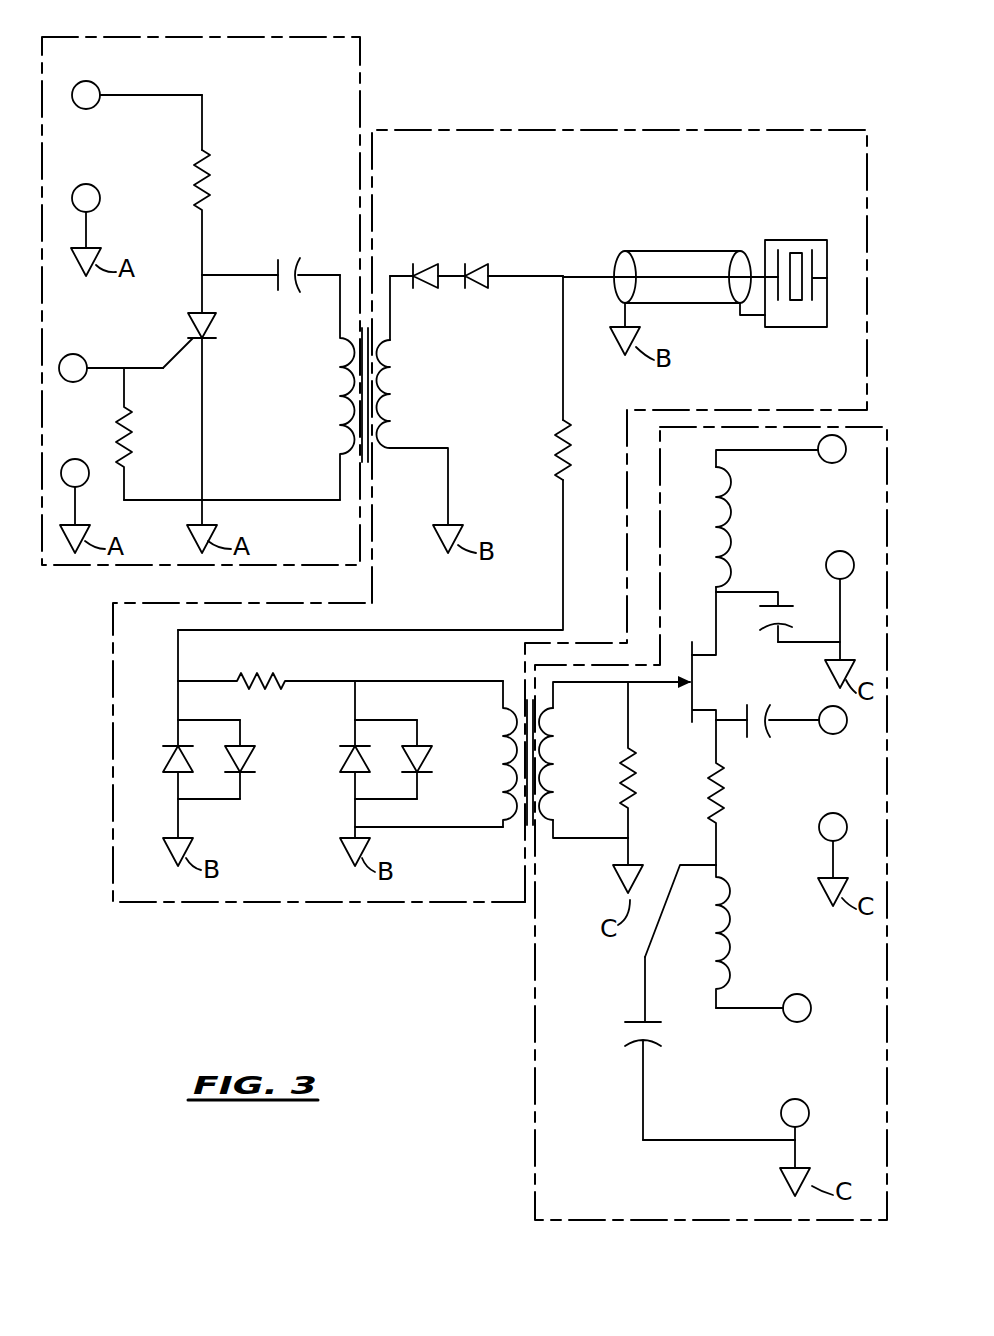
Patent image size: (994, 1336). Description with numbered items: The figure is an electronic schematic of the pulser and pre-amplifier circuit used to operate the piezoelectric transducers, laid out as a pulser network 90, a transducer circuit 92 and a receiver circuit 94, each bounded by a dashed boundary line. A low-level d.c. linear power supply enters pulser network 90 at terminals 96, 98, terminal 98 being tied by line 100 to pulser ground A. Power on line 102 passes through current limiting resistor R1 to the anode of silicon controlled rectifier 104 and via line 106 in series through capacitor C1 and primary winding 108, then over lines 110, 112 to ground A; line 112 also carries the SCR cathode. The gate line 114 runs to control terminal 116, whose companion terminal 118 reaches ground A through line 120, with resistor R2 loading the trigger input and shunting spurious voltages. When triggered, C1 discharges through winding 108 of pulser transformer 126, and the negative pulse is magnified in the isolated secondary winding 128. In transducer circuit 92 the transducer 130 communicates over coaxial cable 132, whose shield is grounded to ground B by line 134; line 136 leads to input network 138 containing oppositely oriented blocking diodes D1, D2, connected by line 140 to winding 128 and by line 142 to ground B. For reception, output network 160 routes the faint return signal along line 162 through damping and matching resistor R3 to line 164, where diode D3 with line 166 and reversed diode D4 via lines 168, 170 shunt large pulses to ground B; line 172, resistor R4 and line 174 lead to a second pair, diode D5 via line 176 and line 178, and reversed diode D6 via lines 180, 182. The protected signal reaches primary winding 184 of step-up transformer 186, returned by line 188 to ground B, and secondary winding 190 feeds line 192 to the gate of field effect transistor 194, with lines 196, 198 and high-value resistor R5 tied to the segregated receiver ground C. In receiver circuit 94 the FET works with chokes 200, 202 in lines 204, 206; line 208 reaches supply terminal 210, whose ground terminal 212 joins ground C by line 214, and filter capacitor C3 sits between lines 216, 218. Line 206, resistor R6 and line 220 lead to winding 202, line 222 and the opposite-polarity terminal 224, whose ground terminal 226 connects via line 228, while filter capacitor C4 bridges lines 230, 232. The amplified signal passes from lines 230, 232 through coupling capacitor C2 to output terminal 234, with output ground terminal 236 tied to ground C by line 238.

The pulser network 90 is at (238, 36).
The transducer circuit 92 is at (624, 128).
The receiver circuit 94 is at (533, 1030).
The terminal 96 is at (99, 84).
The terminal 98 is at (100, 198).
The line 100 is at (88, 232).
The line 102 is at (205, 102).
The silicon controlled rectifier 104 is at (216, 325).
The line 106 is at (228, 274).
The primary winding 108 is at (338, 400).
The line 110 is at (265, 498).
The line 112 is at (205, 447).
The gate line 114 is at (112, 366).
The terminal 116 is at (70, 352).
The terminal 118 is at (85, 425).
The line 120 is at (80, 510).
The pulser transformer 126 is at (463, 372).
The secondary winding 128 is at (387, 420).
The transducer 130 is at (808, 238).
The coaxial cable 132 is at (670, 252).
The line 134 is at (630, 314).
The line 136 is at (538, 274).
The input network 138 is at (441, 218).
The line 140 is at (392, 322).
The line 142 is at (450, 478).
The output network 160 is at (558, 550).
The line 162 is at (562, 340).
The line 164 is at (388, 628).
The line 166 is at (176, 790).
The line 168 is at (228, 720).
The line 170 is at (222, 800).
The line 172 is at (200, 679).
The line 174 is at (358, 679).
The line 176 is at (357, 700).
The line 178 is at (352, 812).
The line 180 is at (418, 722).
The line 182 is at (418, 800).
The primary winding 184 is at (512, 700).
The step-up transformer 186 is at (563, 843).
The line 188 is at (440, 830).
The secondary winding 190 is at (556, 770).
The line 192 is at (562, 690).
The field effect transistor 194 is at (700, 708).
The line 196 is at (570, 836).
The line 198 is at (630, 850).
The inductive winding 200 is at (730, 512).
The inductive winding 202 is at (733, 935).
The line 204 is at (713, 620).
The line 206 is at (713, 728).
The line 208 is at (750, 452).
The power supply input terminal 210 is at (830, 464).
The grounding terminal 212 is at (835, 551).
The line 214 is at (836, 592).
The line 216 is at (750, 592).
The line 218 is at (808, 643).
The line 220 is at (720, 866).
The line 222 is at (742, 1012).
The power supply terminal 224 is at (806, 996).
The ground terminal 226 is at (806, 1100).
The line 228 is at (800, 1160).
The line 230 is at (738, 724).
The line 232 is at (810, 735).
The terminal 234 is at (830, 735).
The terminal 236 is at (821, 826).
The line 238 is at (832, 855).
The current limiting resistor R1 is at (212, 192).
The resistor R2 is at (135, 430).
The resistor R3 is at (570, 428).
The resistor R4 is at (276, 678).
The resistor R5 is at (645, 740).
The resistor R6 is at (722, 812).
The capacitor C1 is at (318, 232).
The coupling capacitor C2 is at (772, 714).
The filter capacitor C3 is at (790, 625).
The filter capacitor C4 is at (641, 1044).
The blocking diode D1 is at (428, 262).
The blocking diode D2 is at (476, 262).
The diode D3 is at (172, 742).
The diode D4 is at (252, 760).
The diode D5 is at (347, 772).
The diode D6 is at (430, 754).